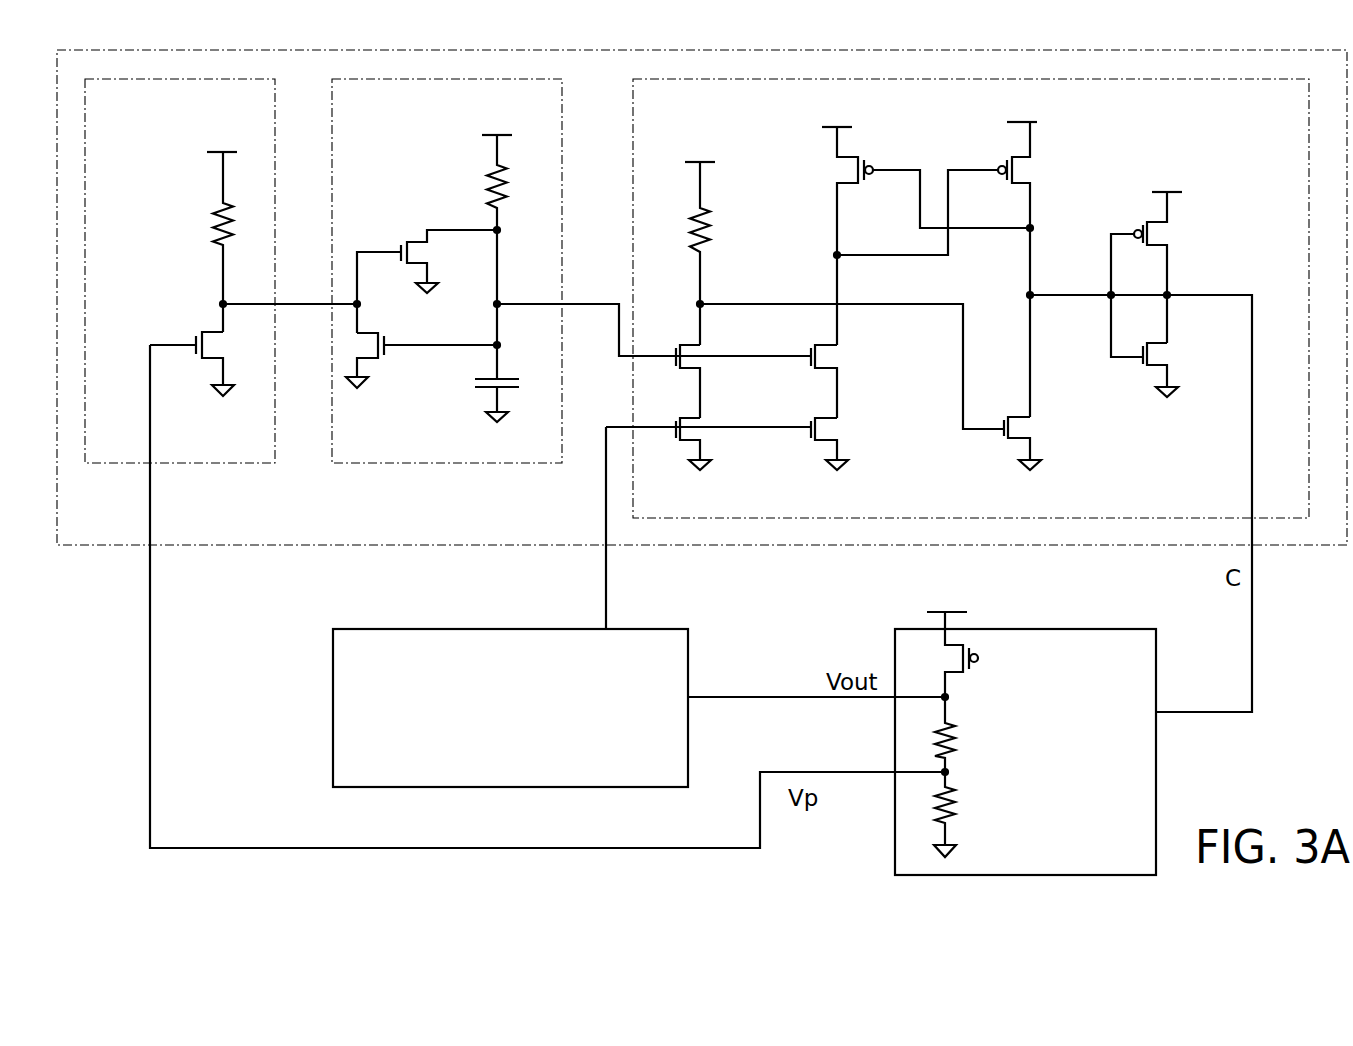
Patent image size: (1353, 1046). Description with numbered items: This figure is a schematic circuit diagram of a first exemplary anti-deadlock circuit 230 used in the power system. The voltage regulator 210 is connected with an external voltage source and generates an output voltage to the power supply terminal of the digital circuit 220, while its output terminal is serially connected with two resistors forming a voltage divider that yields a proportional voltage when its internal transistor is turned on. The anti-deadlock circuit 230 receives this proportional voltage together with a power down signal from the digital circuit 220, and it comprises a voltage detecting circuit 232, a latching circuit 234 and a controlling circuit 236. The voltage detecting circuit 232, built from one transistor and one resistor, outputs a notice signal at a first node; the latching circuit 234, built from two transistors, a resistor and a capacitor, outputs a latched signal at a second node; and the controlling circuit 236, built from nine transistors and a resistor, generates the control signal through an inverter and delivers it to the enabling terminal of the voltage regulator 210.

The voltage regulator 210 is at (1120, 861).
The digital circuit 220 is at (405, 778).
The anti-deadlock circuit 230 is at (537, 538).
The voltage detecting circuit 232 is at (152, 112).
The latching circuit 234 is at (391, 112).
The controlling circuit 236 is at (1293, 112).